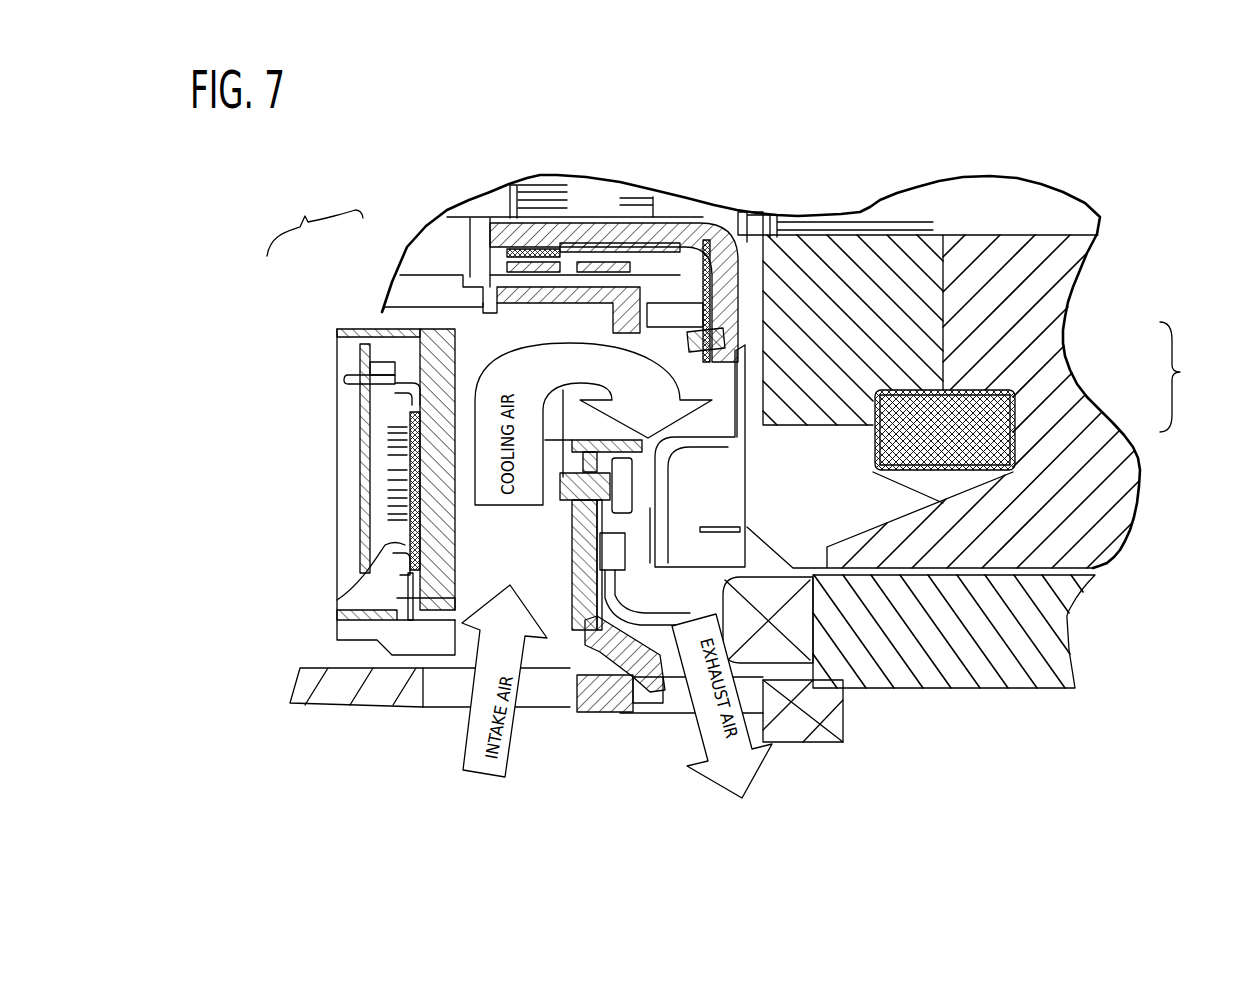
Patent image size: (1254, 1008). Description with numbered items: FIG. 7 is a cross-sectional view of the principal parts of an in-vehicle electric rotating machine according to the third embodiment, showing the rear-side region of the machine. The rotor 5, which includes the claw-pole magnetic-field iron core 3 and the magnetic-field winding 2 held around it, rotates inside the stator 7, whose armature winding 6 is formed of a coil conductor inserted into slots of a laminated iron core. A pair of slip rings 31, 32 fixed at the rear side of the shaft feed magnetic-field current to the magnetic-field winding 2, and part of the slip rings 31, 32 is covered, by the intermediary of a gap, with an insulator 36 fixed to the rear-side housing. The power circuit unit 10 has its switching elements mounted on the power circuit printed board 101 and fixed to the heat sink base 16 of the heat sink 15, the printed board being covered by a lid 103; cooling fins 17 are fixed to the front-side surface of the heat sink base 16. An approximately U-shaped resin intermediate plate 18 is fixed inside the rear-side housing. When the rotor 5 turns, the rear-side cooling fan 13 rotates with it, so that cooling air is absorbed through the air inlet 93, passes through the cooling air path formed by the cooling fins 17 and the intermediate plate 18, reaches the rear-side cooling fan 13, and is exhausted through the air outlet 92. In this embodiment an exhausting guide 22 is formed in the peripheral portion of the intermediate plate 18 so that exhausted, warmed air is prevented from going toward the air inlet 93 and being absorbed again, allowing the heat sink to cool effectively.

The magnetic-field winding 2 is at (1003, 417).
The magnetic-field iron core 3 is at (1037, 320).
The rotor 5 is at (1182, 377).
The armature winding 6 is at (793, 620).
The stator 7 is at (957, 673).
The power circuit unit 10 is at (383, 455).
The rear-side cooling fan 13 is at (708, 496).
The heat sink 15 is at (315, 219).
The heat sink base 16 is at (420, 364).
The cooling fins 17 is at (473, 353).
The intermediate plate 18 is at (597, 612).
The exhausting guide 22 is at (640, 690).
The slip ring 31 is at (515, 253).
The slip ring 32 is at (618, 255).
The insulator 36 is at (510, 297).
The air outlet 92 is at (690, 703).
The air inlet 93 is at (437, 700).
The power circuit printed board 101 is at (397, 598).
The lid 103 is at (365, 503).